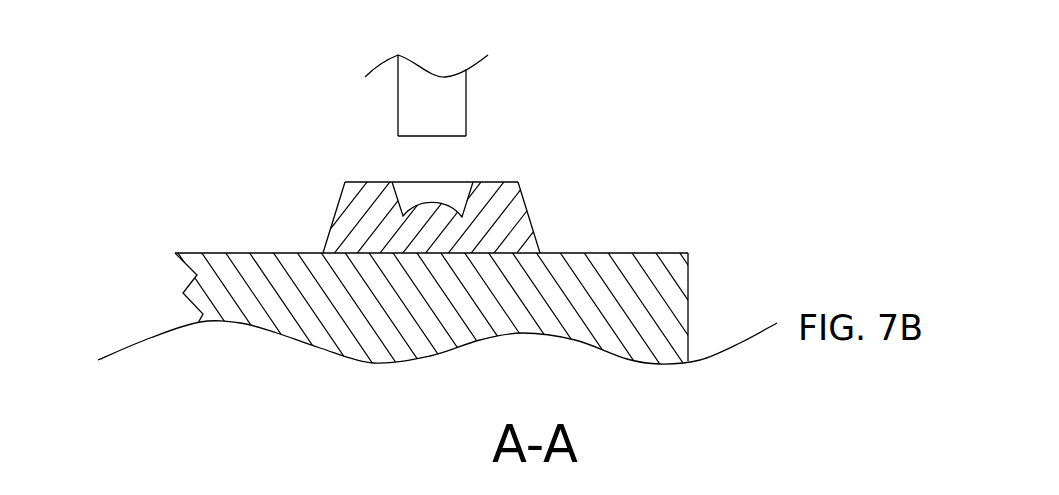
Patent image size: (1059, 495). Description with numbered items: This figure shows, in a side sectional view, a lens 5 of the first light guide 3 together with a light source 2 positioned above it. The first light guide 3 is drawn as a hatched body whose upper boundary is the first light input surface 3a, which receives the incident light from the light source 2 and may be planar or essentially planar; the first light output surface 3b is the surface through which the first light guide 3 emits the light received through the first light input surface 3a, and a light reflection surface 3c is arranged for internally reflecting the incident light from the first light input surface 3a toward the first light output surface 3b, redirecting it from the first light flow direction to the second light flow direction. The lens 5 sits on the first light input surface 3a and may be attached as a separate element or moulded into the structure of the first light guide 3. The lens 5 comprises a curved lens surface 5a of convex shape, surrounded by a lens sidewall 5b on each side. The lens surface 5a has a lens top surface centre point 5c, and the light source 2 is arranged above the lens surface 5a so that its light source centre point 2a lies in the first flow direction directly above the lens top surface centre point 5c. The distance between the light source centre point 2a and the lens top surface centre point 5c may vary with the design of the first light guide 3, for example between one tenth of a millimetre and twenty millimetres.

The light source 2 is at (433, 108).
The light source centre point 2a is at (433, 139).
The lens 5 is at (460, 178).
The lens surface 5a is at (447, 204).
The lens sidewall 5b is at (337, 207).
The lens top surface centre point 5c is at (435, 200).
The first light guide 3 is at (442, 267).
The first light input surface 3a is at (213, 253).
The first light output surface 3b is at (688, 280).
The light reflection surface 3c is at (186, 283).